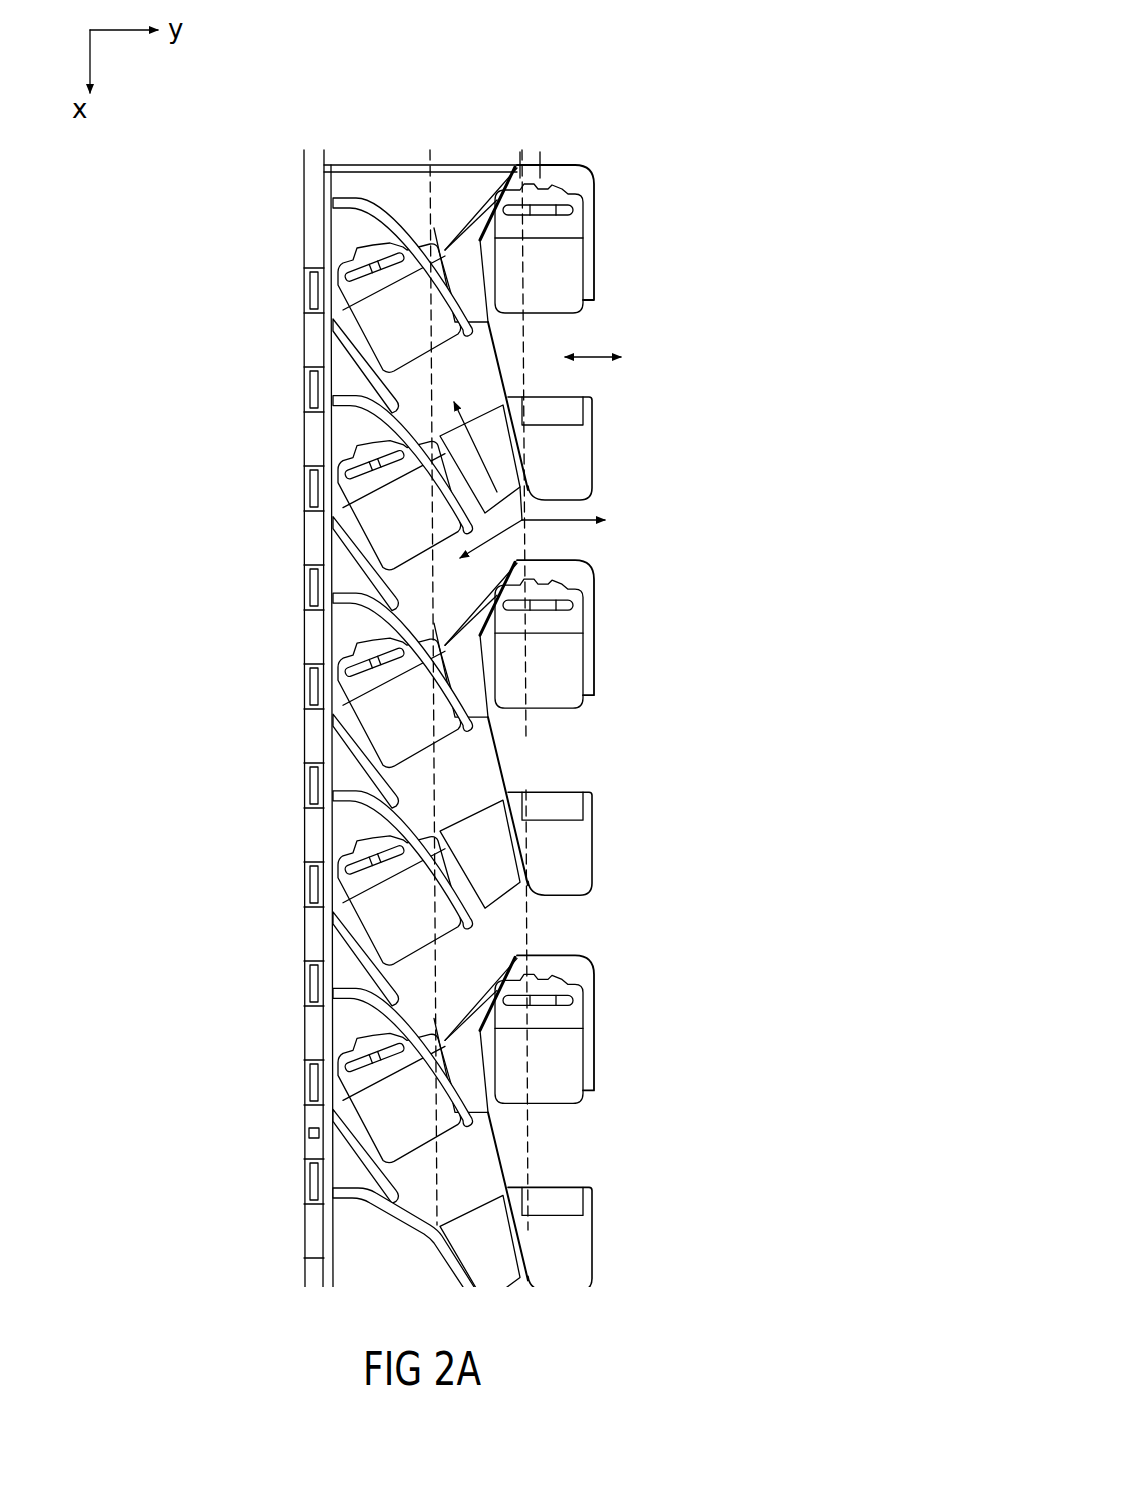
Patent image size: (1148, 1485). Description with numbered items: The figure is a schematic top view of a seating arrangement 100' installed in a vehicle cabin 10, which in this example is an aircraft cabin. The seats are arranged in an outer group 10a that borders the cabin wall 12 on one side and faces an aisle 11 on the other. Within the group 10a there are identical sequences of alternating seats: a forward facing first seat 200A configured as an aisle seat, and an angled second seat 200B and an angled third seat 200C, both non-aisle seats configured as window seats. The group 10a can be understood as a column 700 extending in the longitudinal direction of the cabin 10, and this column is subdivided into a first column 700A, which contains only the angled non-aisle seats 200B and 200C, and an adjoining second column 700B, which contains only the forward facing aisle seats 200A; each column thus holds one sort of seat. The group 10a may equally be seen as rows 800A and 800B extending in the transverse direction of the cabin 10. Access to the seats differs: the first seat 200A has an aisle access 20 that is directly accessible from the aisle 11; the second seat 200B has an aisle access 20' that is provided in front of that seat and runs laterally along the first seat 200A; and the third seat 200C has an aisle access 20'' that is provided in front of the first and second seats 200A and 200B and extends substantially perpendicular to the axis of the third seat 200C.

The vehicle cabin 10 is at (806, 164).
The group 10a is at (543, 123).
The aisle 11 is at (674, 420).
The cabin wall 12 is at (297, 285).
The aisle access 20 is at (593, 337).
The aisle access 20' is at (562, 449).
The aisle access 20'' is at (565, 539).
The seating arrangement 100' is at (629, 689).
The first seat 200A is at (604, 243).
The second seat 200B is at (394, 193).
The third seat 200C is at (354, 429).
The column 700 is at (641, 101).
The first column 700A is at (367, 142).
The second column 700B is at (576, 151).
The row 800A is at (708, 468).
The row 800B is at (785, 278).